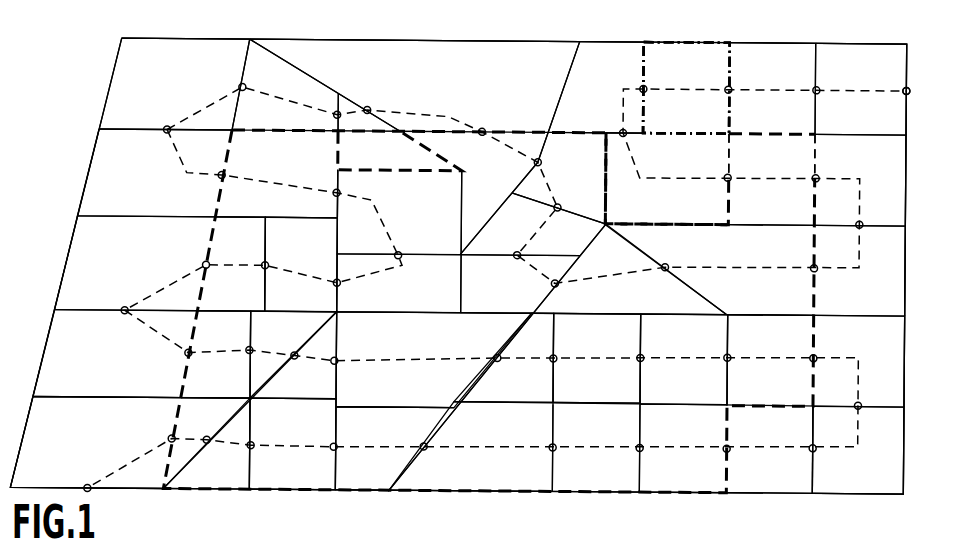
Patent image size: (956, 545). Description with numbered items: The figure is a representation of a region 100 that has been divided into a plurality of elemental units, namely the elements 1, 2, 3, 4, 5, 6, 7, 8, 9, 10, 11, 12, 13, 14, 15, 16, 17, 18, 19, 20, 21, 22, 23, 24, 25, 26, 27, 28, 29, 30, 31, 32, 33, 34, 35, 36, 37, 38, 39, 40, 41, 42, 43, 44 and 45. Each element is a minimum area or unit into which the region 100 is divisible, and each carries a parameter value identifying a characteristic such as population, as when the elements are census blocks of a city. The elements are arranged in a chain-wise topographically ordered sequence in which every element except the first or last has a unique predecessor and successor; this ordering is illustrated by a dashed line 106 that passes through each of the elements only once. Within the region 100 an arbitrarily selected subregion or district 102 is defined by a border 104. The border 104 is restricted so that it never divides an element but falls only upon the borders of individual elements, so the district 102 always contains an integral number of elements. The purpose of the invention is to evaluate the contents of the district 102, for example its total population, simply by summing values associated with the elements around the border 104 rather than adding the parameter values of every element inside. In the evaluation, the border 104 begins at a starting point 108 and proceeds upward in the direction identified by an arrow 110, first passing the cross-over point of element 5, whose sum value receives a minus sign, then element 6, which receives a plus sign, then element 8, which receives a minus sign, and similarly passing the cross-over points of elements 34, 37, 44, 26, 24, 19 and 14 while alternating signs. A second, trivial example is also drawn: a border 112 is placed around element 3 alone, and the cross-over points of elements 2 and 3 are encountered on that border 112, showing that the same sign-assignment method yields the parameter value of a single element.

The region 100 is at (74, 171).
The district 102 is at (390, 492).
The border 104 is at (426, 473).
The dashed line 106 is at (912, 91).
The starting point 108 is at (712, 210).
The arrow 110 is at (728, 146).
The border 112 is at (668, 47).
The element 1 is at (861, 89).
The element 2 is at (772, 89).
The element 3 is at (686, 88).
The element 4 is at (596, 87).
The element 5 is at (638, 172).
The element 6 is at (788, 172).
The element 7 is at (860, 180).
The element 8 is at (860, 270).
The element 9 is at (771, 270).
The element 10 is at (630, 269).
The element 11 is at (520, 284).
The element 12 is at (533, 209).
The element 13 is at (572, 113).
The element 14 is at (474, 193).
The element 15 is at (414, 85).
The element 16 is at (361, 125).
The element 17 is at (316, 85).
The element 18 is at (174, 84).
The element 19 is at (146, 173).
The element 20 is at (276, 184).
The element 21 is at (399, 212).
The element 22 is at (399, 283).
The element 23 is at (301, 264).
The element 24 is at (232, 264).
The element 25 is at (127, 263).
The element 26 is at (107, 354).
The element 27 is at (216, 355).
The element 28 is at (293, 355).
The element 29 is at (293, 355).
The element 30 is at (434, 360).
The element 31 is at (504, 358).
The element 32 is at (597, 358).
The element 33 is at (684, 359).
The element 34 is at (770, 360).
The element 35 is at (859, 361).
The element 36 is at (858, 450).
The element 37 is at (785, 449).
The element 38 is at (683, 448).
The element 39 is at (596, 447).
The element 40 is at (470, 446).
The element 41 is at (394, 449).
The element 42 is at (292, 444).
The element 43 is at (206, 443).
The element 44 is at (215, 416).
The element 45 is at (95, 442).